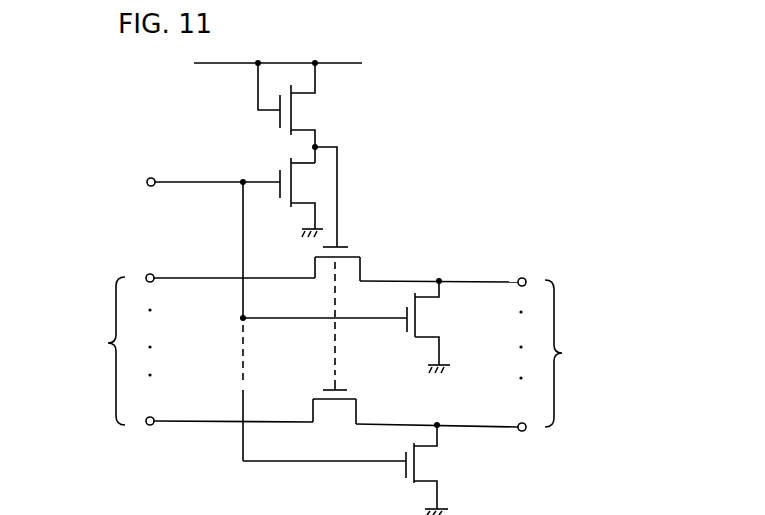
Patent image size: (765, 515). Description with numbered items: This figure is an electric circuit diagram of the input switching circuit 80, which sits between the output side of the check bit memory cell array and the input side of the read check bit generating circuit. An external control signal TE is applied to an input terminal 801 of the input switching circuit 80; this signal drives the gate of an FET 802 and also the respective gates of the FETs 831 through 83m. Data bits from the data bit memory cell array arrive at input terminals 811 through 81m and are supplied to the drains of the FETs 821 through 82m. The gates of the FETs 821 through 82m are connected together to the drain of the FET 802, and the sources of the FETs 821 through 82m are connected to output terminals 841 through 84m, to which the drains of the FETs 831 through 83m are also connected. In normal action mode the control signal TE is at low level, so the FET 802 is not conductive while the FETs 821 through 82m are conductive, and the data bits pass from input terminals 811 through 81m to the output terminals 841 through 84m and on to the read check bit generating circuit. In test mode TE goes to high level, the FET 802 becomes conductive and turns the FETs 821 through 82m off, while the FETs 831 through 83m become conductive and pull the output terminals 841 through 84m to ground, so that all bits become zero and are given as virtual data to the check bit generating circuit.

The input switching circuit 80 is at (487, 138).
The input terminal 801 is at (155, 178).
The FET 802 is at (280, 179).
The input terminal 811 is at (156, 274).
The input terminal 81m is at (153, 417).
The FET 821 is at (348, 246).
The FET 82m is at (340, 390).
The FET 831 is at (417, 322).
The FET 83m is at (416, 466).
The output terminal 841 is at (526, 278).
The output terminal 84m is at (526, 431).